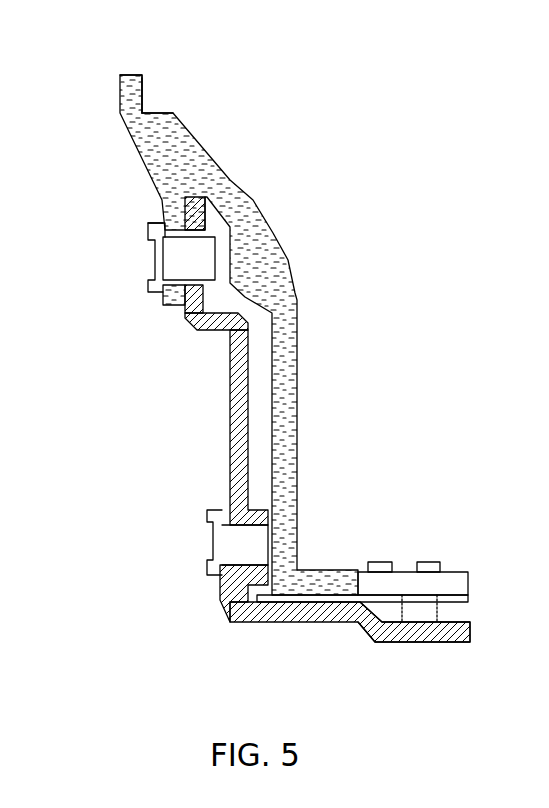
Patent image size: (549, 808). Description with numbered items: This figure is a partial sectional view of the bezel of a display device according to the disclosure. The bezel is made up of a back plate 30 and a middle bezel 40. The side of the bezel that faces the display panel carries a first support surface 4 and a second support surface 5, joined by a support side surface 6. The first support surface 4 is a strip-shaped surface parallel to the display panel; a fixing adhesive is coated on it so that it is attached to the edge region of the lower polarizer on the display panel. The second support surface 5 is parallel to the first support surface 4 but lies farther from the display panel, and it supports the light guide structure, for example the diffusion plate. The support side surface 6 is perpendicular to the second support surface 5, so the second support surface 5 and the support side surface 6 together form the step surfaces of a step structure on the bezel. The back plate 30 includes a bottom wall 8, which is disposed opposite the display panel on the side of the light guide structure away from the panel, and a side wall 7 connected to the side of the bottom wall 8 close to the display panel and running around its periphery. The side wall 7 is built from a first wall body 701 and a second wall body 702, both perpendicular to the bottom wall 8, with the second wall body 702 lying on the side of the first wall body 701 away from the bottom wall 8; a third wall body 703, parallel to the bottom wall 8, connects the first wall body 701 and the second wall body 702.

The first support surface 4 is at (128, 75).
The second support surface 5 is at (157, 113).
The support side surface 6 is at (143, 95).
The middle bezel 40 is at (263, 260).
The side wall 7 is at (205, 405).
The first wall body 701 is at (230, 427).
The second wall body 702 is at (185, 298).
The third wall body 703 is at (212, 332).
The bottom wall 8 is at (290, 627).
The back plate 30 is at (415, 640).